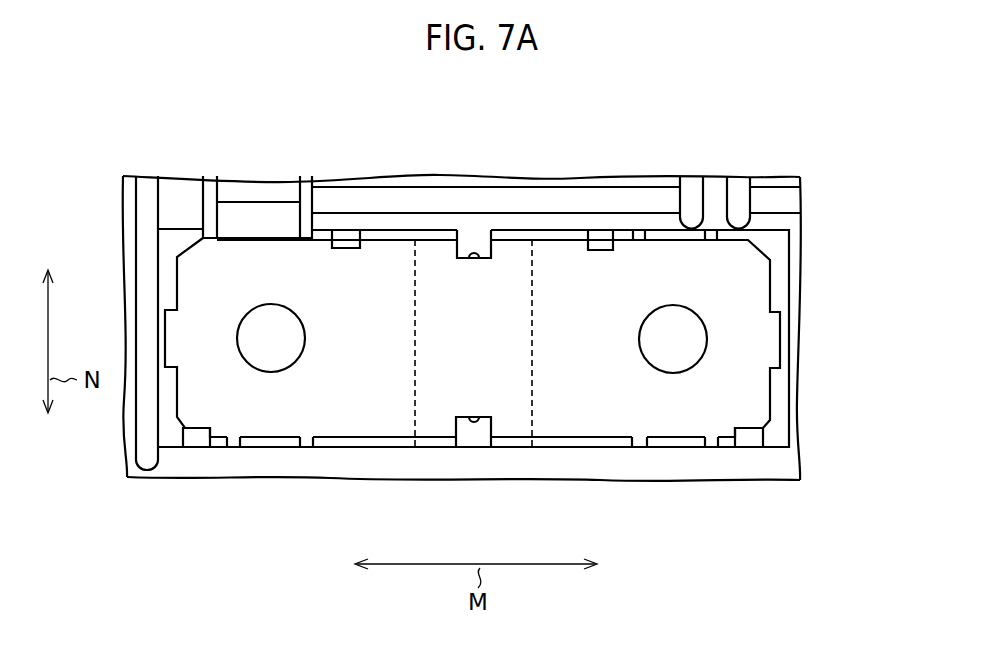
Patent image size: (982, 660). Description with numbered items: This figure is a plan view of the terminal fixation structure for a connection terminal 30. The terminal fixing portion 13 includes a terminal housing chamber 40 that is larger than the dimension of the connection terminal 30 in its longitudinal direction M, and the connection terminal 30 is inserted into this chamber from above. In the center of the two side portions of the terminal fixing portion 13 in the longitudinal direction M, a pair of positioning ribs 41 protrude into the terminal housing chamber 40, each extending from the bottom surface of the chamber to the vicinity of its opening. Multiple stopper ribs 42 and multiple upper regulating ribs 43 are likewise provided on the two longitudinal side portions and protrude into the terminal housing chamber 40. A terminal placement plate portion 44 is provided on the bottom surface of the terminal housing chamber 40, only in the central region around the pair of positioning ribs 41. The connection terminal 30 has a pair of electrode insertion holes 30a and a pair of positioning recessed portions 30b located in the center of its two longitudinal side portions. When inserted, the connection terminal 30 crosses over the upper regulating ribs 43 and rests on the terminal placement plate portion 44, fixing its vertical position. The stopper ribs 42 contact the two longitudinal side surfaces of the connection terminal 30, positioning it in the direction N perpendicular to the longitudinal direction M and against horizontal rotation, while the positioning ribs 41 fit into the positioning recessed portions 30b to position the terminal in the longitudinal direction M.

The terminal fixing portion 13 is at (797, 260).
The connection terminal 30 is at (578, 372).
The electrode insertion holes 30a is at (250, 343).
The positioning recessed portions 30b is at (474, 263).
The terminal housing chamber 40 is at (783, 408).
The positioning ribs 41 is at (474, 247).
The stopper ribs 42 is at (210, 213).
The upper regulating ribs 43 is at (346, 240).
The terminal placement plate portion 44 is at (415, 285).